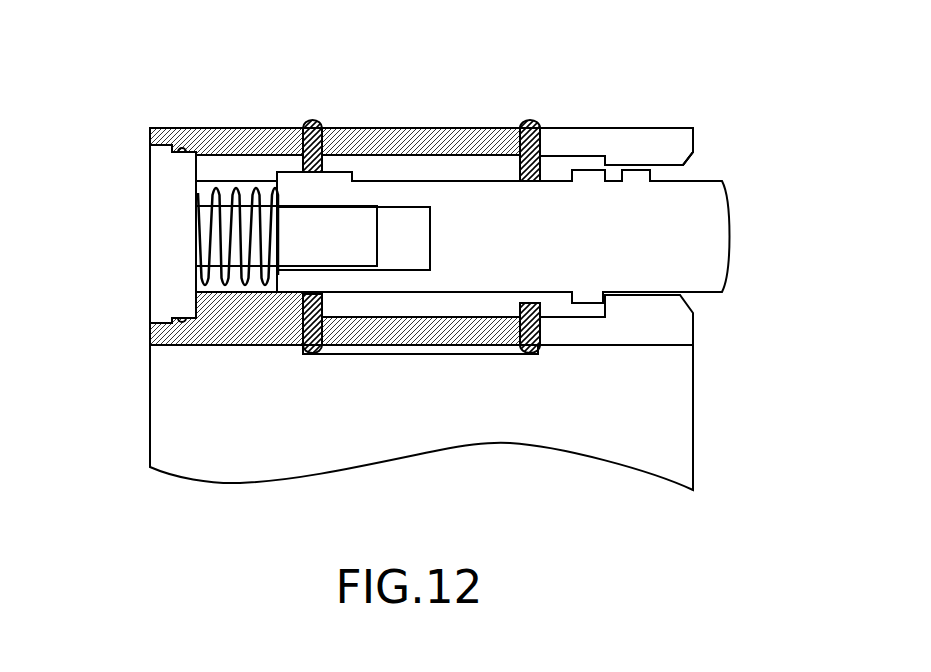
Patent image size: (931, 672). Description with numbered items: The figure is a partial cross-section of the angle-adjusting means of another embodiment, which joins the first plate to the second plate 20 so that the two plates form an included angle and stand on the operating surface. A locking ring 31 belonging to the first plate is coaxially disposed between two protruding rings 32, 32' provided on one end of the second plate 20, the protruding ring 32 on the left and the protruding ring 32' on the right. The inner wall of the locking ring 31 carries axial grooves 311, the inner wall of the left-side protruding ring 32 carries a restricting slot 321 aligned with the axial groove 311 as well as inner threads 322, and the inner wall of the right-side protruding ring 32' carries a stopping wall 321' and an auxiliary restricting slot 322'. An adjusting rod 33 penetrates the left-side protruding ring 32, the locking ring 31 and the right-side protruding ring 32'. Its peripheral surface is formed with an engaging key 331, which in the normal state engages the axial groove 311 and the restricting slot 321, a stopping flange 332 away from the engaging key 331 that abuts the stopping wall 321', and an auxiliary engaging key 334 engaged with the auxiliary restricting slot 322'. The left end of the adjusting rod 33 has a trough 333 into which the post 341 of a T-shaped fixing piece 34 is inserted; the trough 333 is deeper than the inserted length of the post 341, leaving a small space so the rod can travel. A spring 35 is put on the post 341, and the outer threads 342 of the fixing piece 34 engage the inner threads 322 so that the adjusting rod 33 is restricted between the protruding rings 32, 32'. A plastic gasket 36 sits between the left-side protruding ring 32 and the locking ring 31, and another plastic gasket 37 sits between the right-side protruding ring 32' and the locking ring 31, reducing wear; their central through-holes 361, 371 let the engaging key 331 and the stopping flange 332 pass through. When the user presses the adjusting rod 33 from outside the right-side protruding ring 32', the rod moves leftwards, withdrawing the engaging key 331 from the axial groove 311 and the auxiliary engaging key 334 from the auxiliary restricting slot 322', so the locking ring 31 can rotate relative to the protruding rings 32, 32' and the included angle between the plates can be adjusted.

The second plate 20 is at (667, 418).
The locking ring 31 is at (503, 150).
The axial groove 311 is at (478, 172).
The protruding ring 32 is at (344, 187).
The protruding ring 32' is at (660, 210).
The restricting slot 321 is at (249, 115).
The stopping wall 321' is at (463, 364).
The inner threads 322 is at (167, 187).
The auxiliary restricting slot 322' is at (630, 130).
The adjusting rod 33 is at (725, 243).
The engaging key 331 is at (340, 174).
The stopping flange 332 is at (585, 300).
The trough 333 is at (397, 222).
The auxiliary engaging key 334 is at (642, 172).
The fixing piece 34 is at (165, 243).
The post 341 is at (339, 253).
The outer threads 342 is at (180, 152).
The spring 35 is at (222, 277).
The plastic gasket 36 is at (313, 120).
The central through-hole 361 is at (277, 165).
The plastic gasket 37 is at (530, 122).
The central through-hole 371 is at (542, 176).